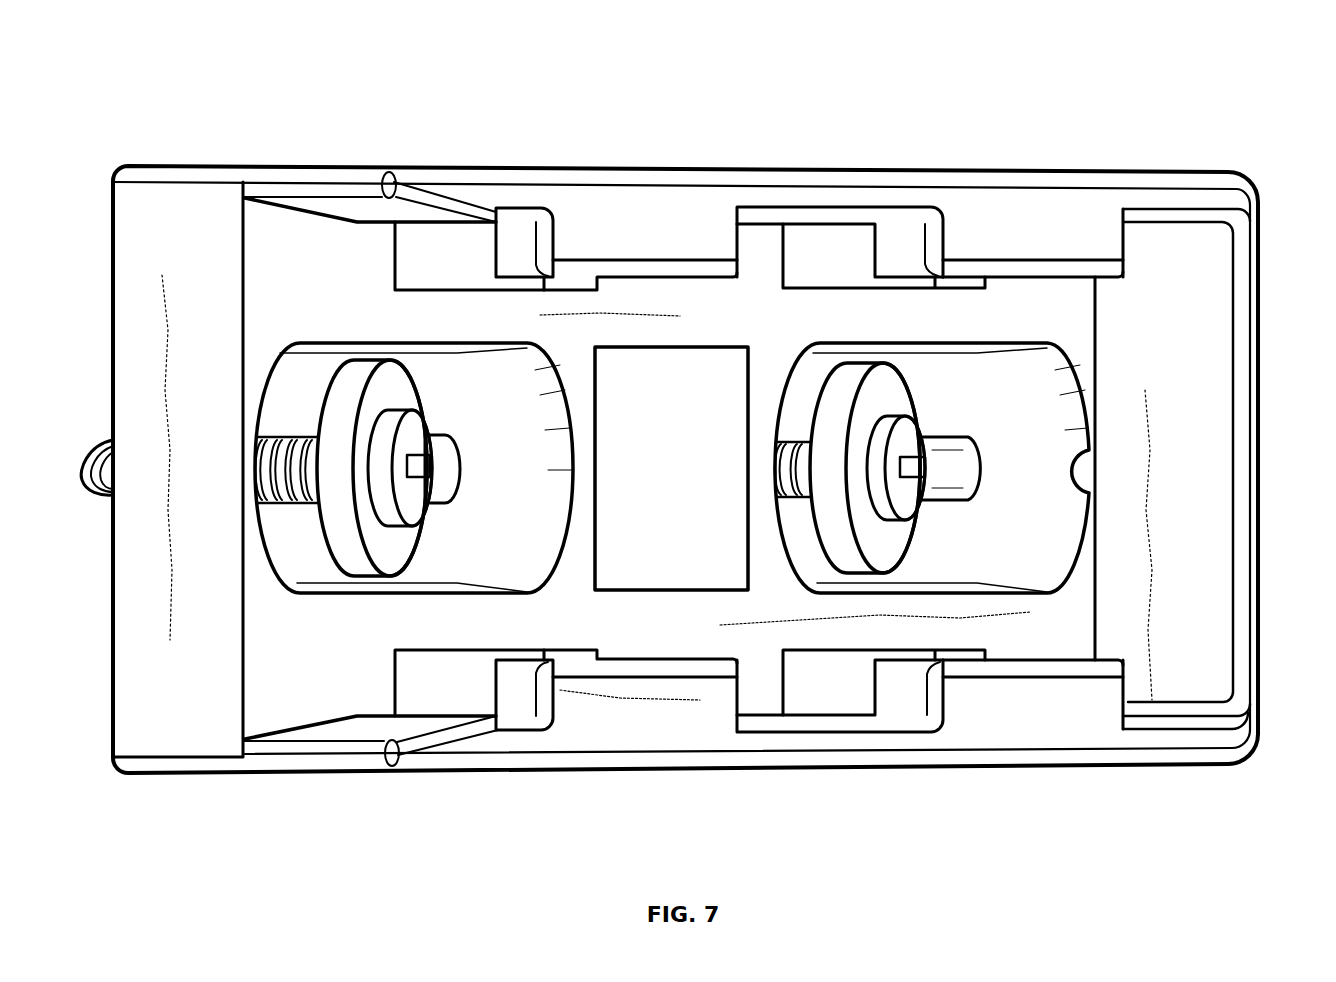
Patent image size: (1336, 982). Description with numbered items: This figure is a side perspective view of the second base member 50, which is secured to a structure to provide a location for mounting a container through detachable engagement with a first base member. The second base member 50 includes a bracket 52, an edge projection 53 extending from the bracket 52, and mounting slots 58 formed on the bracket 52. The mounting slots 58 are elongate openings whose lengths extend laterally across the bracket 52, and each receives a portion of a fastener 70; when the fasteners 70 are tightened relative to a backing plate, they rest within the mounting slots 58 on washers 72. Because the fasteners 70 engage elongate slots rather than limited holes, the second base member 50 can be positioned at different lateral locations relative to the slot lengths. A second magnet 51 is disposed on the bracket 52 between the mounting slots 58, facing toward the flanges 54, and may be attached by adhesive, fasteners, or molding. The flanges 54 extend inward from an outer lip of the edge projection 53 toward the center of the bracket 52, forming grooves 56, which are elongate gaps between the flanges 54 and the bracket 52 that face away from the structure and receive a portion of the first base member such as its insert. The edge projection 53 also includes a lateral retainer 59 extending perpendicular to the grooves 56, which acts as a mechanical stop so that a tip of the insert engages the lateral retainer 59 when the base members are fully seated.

The second base member 50 is at (1160, 60).
The second magnet 51 is at (656, 481).
The bracket 52 is at (307, 248).
The edge projection 53 is at (1250, 196).
The flanges 54 is at (600, 235).
The grooves 56 is at (470, 256).
The mounting slots 58 is at (447, 452).
The lateral retainer 59 is at (1185, 405).
The fasteners 70 is at (400, 450).
The washers 72 is at (338, 418).